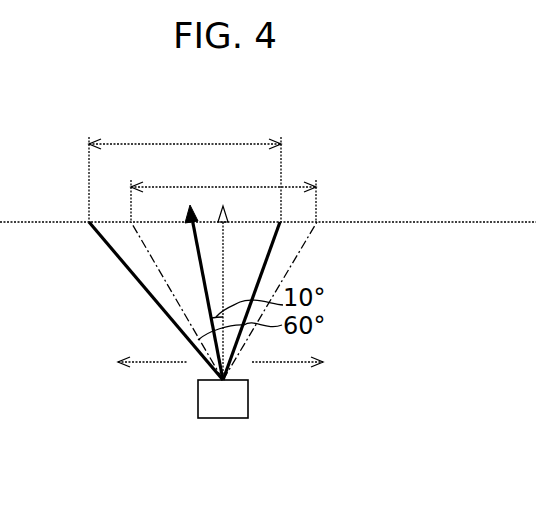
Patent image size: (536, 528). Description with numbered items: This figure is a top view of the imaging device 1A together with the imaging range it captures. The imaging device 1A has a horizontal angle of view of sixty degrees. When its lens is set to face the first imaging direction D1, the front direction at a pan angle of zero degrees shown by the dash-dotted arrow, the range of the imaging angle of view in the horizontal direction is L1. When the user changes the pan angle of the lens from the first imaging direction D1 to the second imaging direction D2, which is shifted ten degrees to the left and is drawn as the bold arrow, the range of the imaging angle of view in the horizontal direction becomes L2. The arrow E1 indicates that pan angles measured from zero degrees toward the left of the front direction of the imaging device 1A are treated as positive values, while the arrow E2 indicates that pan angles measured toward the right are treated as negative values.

The imaging device 1A is at (223, 418).
The first imaging direction D1 is at (223, 238).
The second imaging direction D2 is at (207, 290).
The arrow E1 is at (160, 363).
The arrow E2 is at (277, 363).
The range of the imaging angle of view L1 is at (223, 189).
The range of the imaging angle of view L2 is at (185, 169).